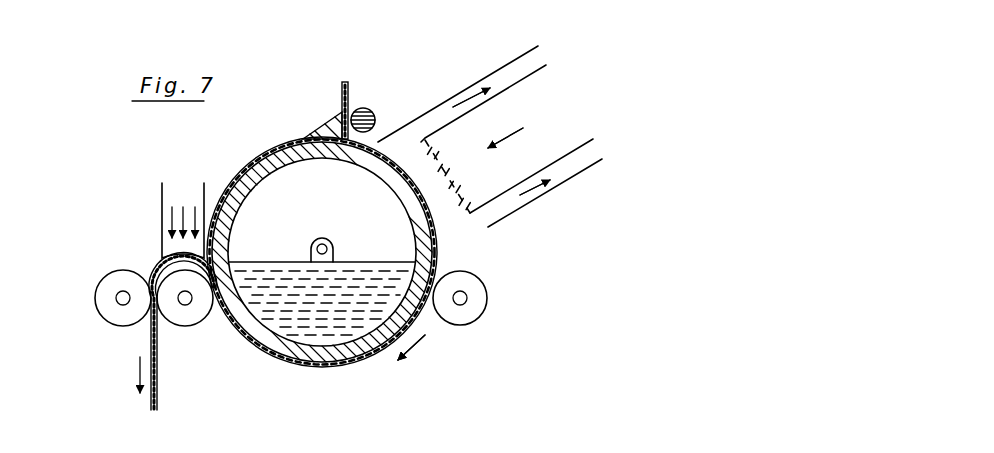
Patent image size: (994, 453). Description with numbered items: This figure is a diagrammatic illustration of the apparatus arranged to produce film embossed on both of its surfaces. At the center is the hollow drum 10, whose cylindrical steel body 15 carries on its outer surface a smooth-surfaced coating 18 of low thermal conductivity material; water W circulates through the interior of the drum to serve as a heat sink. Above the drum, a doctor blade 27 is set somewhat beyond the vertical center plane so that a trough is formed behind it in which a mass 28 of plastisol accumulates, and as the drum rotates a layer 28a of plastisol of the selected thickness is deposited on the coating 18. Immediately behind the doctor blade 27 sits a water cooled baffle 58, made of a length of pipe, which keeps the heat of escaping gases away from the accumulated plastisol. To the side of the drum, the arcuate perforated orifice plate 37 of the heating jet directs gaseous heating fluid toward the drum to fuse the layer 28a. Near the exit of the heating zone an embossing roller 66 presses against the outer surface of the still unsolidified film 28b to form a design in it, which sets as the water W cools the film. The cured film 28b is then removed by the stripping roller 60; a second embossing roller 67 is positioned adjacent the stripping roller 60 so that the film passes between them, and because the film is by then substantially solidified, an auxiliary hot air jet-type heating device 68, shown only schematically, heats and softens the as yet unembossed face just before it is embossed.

The drum 10 is at (308, 240).
The cylindrical steel body 15 is at (259, 174).
The smooth-surfaced coating 18 is at (322, 240).
The doctor blade 27 is at (350, 92).
The mass of plastisol 28 is at (318, 120).
The plastisol layer 28a is at (412, 168).
The cured film 28b is at (160, 400).
The perforated orifice plate 37 is at (461, 184).
The water cooled baffle 58 is at (373, 113).
The stripping roller 60 is at (186, 328).
The embossing roller 66 is at (472, 287).
The second embossing roller 67 is at (95, 290).
The auxiliary hot air jet-type heating device 68 is at (162, 213).
The water W is at (358, 272).